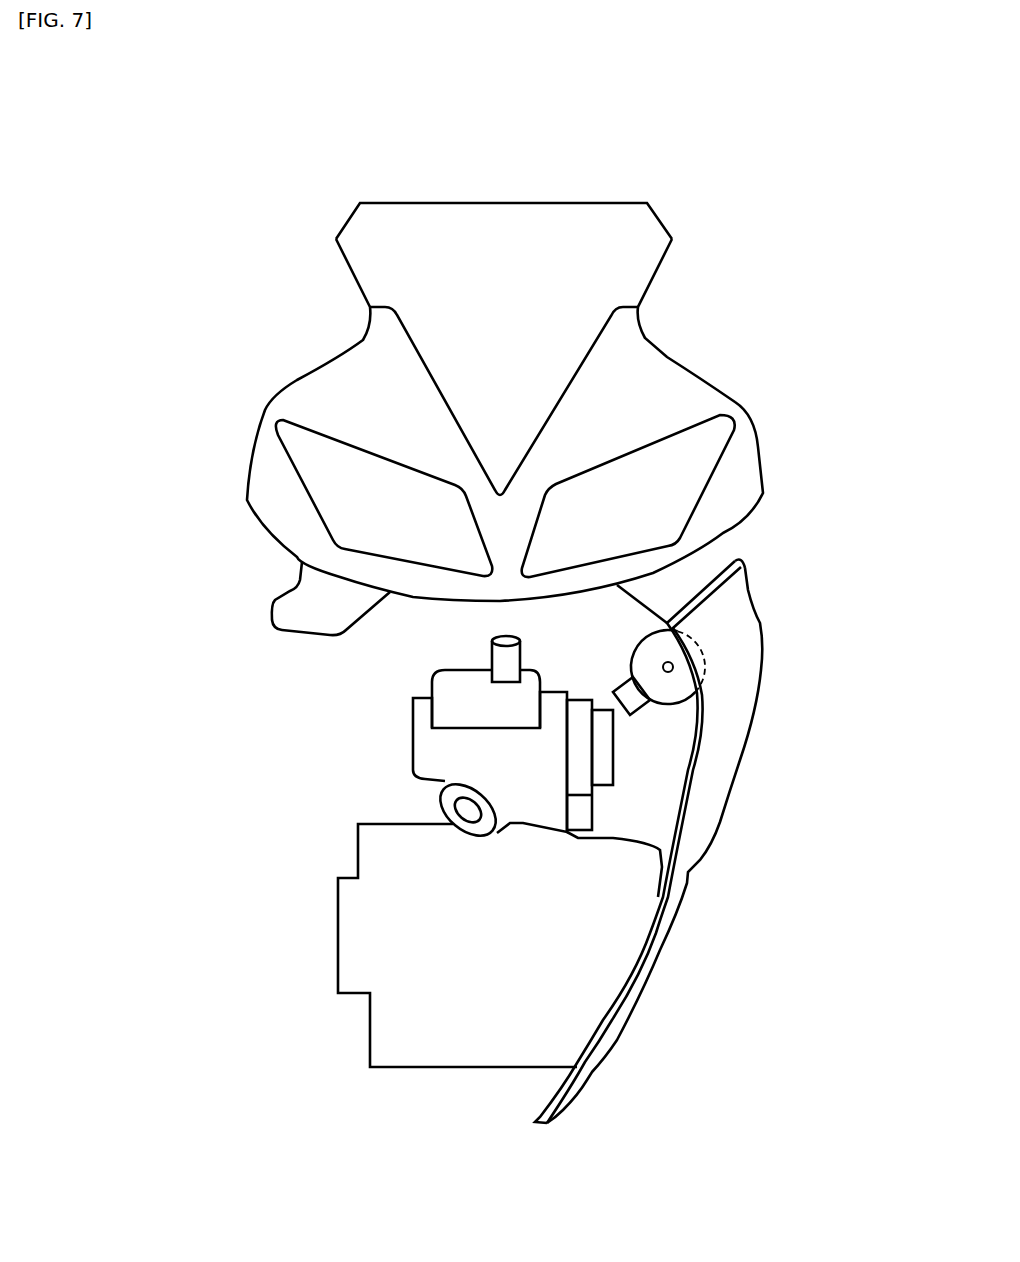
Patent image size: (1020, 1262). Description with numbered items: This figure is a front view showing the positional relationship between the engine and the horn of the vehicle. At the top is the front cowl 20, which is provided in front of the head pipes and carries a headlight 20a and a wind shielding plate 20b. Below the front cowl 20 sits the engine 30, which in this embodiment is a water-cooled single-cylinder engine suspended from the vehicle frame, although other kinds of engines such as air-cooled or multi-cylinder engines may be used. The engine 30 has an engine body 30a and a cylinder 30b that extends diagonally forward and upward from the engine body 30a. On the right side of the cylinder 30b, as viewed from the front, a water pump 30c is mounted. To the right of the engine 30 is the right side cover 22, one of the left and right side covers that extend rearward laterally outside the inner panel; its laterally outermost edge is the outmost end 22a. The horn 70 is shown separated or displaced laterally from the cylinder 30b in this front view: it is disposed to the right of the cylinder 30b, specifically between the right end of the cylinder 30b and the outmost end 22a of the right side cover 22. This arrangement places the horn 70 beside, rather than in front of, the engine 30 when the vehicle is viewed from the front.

The front cowl 20 is at (648, 392).
The headlight 20a is at (340, 497).
The wind shielding plate 20b is at (588, 233).
The right side cover 22 is at (727, 747).
The outmost end of the right side cover 22a is at (760, 627).
The engine 30 is at (345, 829).
The engine body 30a is at (370, 923).
The cylinder 30b is at (430, 743).
The water pump 30c is at (605, 738).
The horn 70 is at (650, 654).